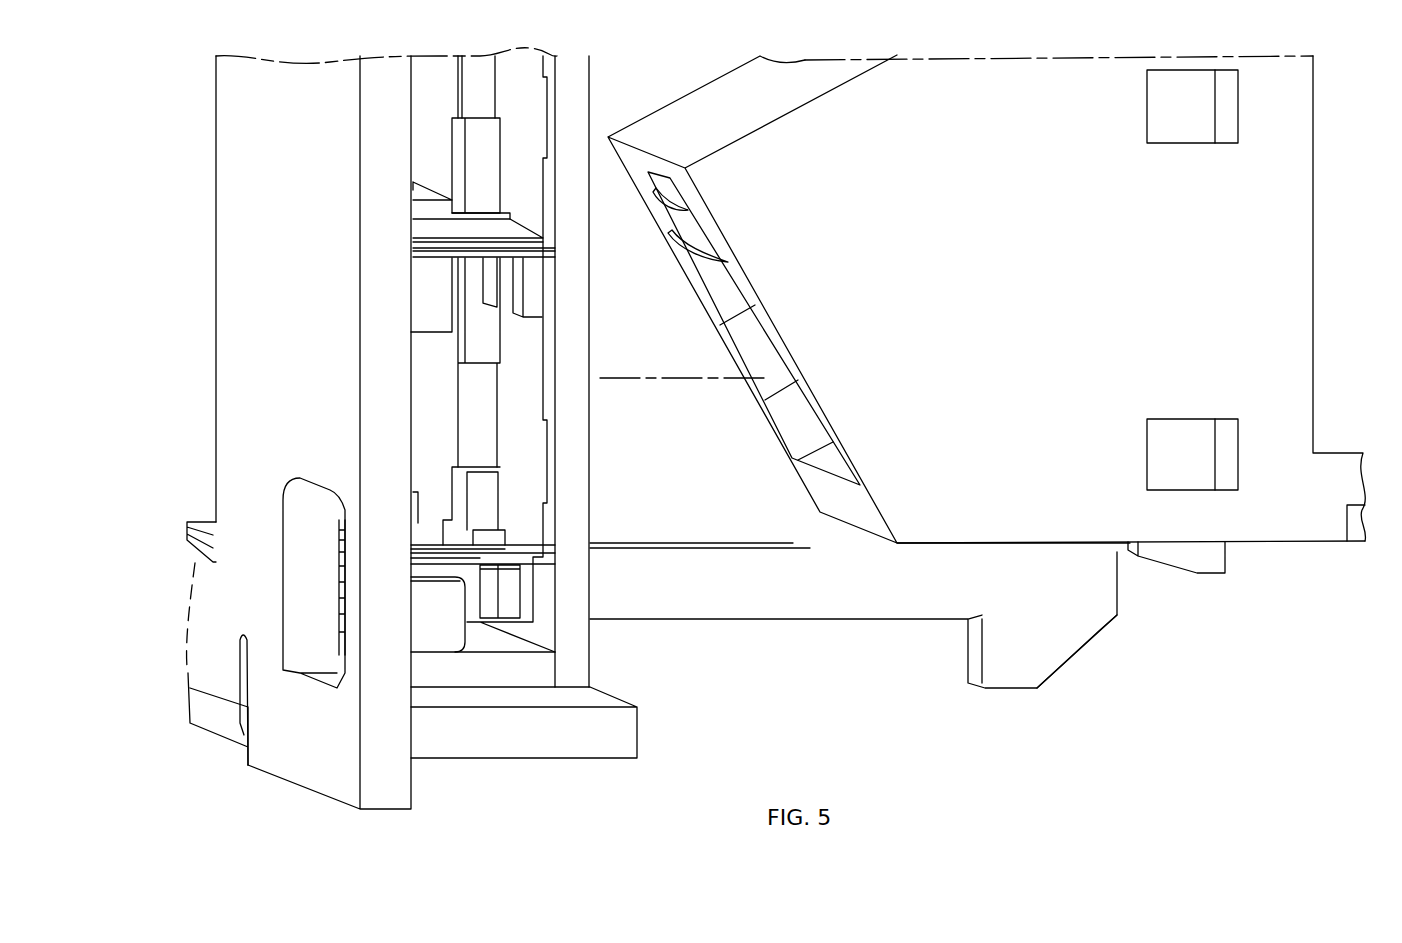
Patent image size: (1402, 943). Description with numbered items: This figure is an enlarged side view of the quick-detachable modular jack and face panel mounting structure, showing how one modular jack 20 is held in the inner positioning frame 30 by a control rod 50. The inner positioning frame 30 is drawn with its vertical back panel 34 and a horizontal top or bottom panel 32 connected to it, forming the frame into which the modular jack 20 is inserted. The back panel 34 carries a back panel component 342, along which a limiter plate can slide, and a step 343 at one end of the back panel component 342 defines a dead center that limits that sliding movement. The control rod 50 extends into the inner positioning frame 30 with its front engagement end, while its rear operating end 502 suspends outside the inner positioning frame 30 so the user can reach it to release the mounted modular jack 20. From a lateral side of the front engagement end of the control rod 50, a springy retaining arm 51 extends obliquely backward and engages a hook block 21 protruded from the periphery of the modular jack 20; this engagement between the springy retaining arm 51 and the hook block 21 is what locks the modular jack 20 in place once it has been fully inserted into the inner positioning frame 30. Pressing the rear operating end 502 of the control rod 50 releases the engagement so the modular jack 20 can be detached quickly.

The modular jack 20 is at (983, 375).
The hook block 21 is at (1168, 567).
The inner positioning frame 30 is at (444, 435).
The top or bottom panel 32 is at (475, 672).
The back panel 34 is at (580, 453).
The back panel component 342 is at (485, 333).
The step 343 is at (492, 522).
The control rod 50 is at (877, 648).
The springy retaining arm 51 is at (502, 562).
The rear operating end 502 is at (1078, 655).